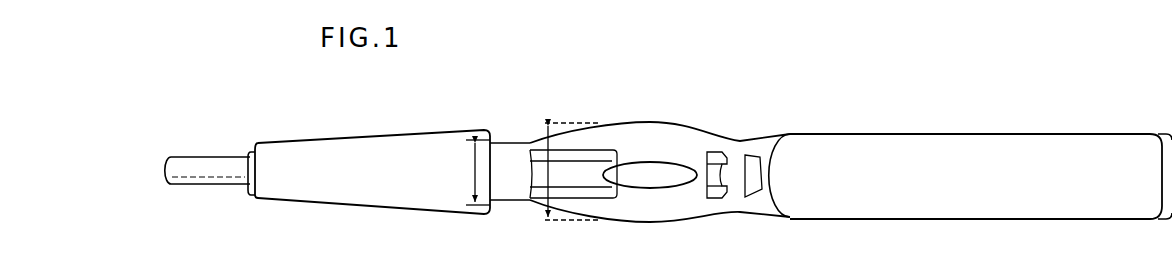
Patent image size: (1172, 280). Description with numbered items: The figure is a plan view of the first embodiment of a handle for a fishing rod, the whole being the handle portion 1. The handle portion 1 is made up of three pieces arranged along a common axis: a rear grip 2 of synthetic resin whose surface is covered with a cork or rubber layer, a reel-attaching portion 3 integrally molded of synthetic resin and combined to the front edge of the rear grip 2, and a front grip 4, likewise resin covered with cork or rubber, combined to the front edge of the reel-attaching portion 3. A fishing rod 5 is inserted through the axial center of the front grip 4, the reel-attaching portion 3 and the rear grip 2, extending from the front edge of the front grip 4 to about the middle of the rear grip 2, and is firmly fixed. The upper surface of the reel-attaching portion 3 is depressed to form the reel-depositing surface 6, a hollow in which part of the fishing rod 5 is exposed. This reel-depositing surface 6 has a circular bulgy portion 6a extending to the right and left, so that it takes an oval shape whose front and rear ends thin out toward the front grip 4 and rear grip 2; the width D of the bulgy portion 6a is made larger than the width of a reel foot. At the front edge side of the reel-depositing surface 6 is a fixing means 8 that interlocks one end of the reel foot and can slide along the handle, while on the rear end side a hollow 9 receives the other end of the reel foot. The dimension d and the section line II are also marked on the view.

The handle portion 1 is at (960, 133).
The rear grip 2 is at (1063, 138).
The reel-attaching portion 3 is at (737, 133).
The front grip 4 is at (365, 139).
The fishing rod 5 is at (203, 163).
The reel-depositing surface 6 is at (660, 147).
The bulgy portion 6a is at (622, 130).
The fixing means 8 is at (507, 190).
The hollow 9 is at (756, 190).
The width of the bulgy portion D is at (547, 175).
The diameter of nose portion d is at (471, 172).
The section line II- II is at (611, 110).